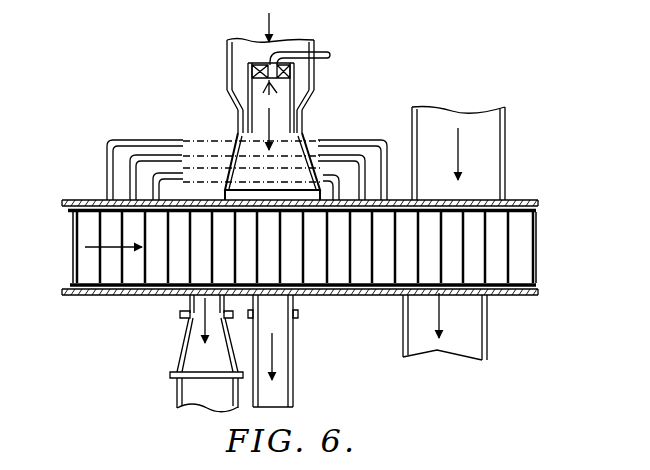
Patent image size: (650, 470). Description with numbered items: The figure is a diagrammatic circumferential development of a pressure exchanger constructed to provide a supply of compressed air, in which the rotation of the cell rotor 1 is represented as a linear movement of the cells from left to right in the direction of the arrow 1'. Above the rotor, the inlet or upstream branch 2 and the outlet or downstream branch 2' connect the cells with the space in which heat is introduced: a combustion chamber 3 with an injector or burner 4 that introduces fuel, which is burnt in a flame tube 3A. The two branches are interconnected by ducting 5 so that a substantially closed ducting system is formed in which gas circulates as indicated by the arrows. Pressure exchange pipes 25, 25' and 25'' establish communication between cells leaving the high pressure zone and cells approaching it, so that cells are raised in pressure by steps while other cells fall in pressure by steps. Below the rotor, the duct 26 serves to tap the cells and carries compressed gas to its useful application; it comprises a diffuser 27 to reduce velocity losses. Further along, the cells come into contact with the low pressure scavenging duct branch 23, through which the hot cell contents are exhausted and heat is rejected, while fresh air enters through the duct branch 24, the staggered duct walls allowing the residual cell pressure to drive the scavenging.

The cell rotor 1 is at (288, 247).
The arrow indicating direction of cell movement 1' is at (111, 233).
The inlet or upstream branch 2 is at (275, 154).
The outlet or downstream branch 2' is at (291, 351).
The combustion chamber 3 is at (238, 115).
The flame tube 3A is at (300, 110).
The injector or burner 4 is at (268, 70).
The ducting 5 is at (298, 47).
The low pressure scavenging duct branch 23 is at (472, 312).
The duct branch 24 is at (492, 127).
The pressure exchange pipe 25 is at (246, 151).
The pressure exchange pipe 25' is at (233, 151).
The pressure exchange pipe 25'' is at (219, 170).
The duct 26 is at (200, 303).
The diffuser 27 is at (190, 363).